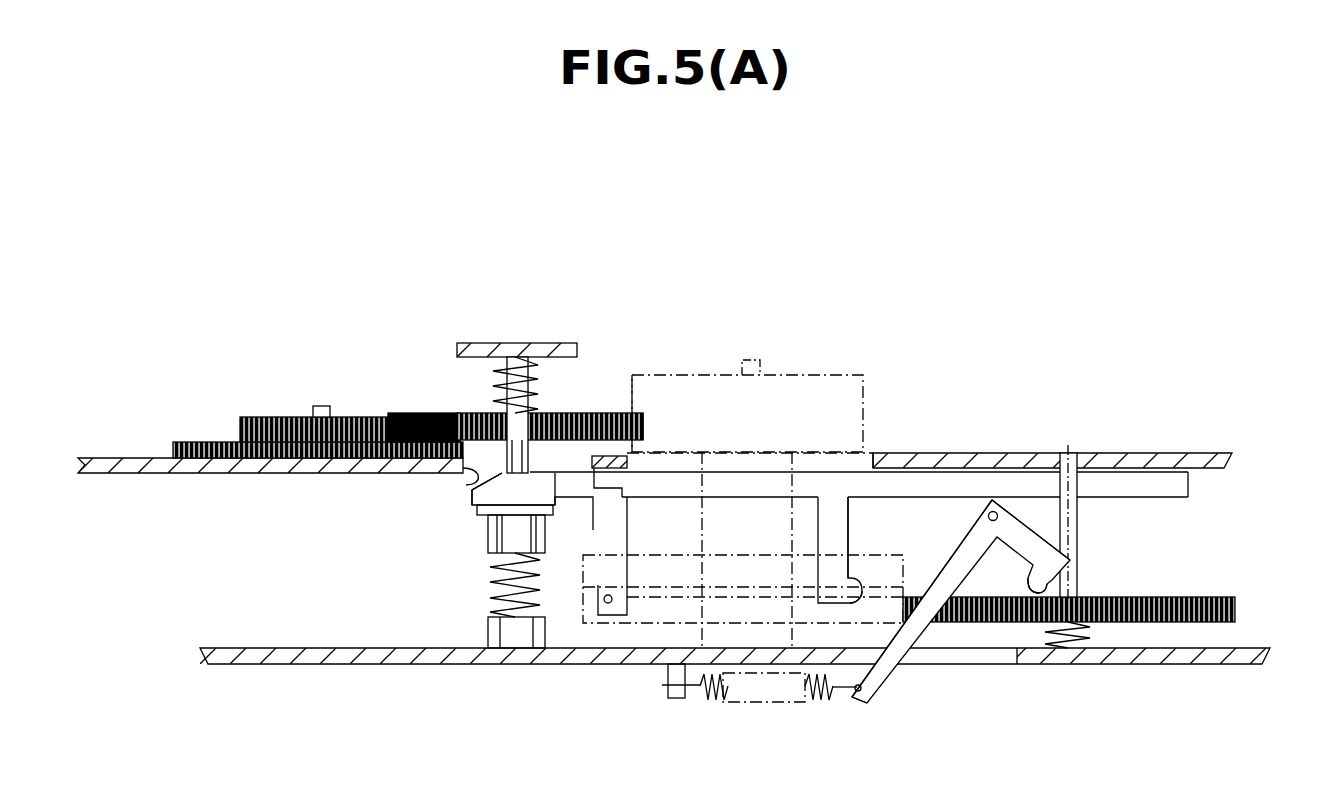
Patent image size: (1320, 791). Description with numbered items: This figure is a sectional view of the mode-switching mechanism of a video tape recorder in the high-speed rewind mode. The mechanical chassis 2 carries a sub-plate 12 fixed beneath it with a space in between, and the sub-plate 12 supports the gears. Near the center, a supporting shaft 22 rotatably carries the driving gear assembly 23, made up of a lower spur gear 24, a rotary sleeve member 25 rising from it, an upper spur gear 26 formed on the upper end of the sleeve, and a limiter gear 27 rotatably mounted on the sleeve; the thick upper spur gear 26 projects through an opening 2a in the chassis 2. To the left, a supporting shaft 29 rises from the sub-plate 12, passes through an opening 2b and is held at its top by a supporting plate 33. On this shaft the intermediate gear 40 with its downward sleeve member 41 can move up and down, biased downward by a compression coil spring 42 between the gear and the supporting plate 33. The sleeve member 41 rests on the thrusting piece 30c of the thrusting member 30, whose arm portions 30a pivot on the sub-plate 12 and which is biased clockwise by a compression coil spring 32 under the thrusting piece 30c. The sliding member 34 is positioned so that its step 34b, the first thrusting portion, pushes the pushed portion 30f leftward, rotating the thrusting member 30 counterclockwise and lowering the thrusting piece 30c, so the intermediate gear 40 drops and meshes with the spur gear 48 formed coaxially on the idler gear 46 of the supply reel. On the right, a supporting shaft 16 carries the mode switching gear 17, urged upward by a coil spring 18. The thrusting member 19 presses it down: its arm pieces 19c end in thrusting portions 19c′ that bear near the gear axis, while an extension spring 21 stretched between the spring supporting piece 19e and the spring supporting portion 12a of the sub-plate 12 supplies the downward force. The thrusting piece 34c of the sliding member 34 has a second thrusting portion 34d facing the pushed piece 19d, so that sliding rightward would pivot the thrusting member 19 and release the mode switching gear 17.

The mechanical chassis 2 is at (1170, 452).
The opening 2a is at (876, 455).
The opening 2b is at (465, 478).
The sub-plate 12 is at (428, 666).
The spring supporting portion 12a is at (676, 698).
The supporting shaft 16 is at (1073, 450).
The mode switching gear 17 is at (1172, 597).
The coil spring 18 is at (1085, 650).
The thrusting member 19 is at (1030, 528).
The arm pieces 19c is at (1040, 540).
The thrusting portion 19c′ is at (1048, 588).
The pushed piece 19d is at (958, 548).
The spring supporting piece 19e is at (872, 698).
The extension spring 21 is at (808, 702).
The supporting shaft 22 is at (748, 362).
The driving gear assembly 23 is at (790, 375).
The lower spur gear 24 is at (617, 625).
The rotary sleeve member 25 is at (702, 513).
The upper spur gear 26 is at (634, 375).
The limiter gear 27 is at (670, 587).
The supporting shaft 29 is at (515, 343).
The thrusting member 30 is at (478, 508).
The arm portions 30a is at (597, 530).
The thrusting piece 30c is at (470, 493).
The pushed portion 30f is at (612, 413).
The compression coil spring 32 is at (497, 583).
The supporting plate 33 is at (550, 343).
The sliding member 34 is at (932, 477).
The step 34b is at (622, 487).
The thrusting piece 34c is at (850, 532).
The second thrusting portion 34d is at (855, 577).
The intermediate gear 40 is at (405, 412).
The sleeve member 41 is at (470, 413).
The compression coil spring 42 is at (505, 387).
The idler gear 46 is at (213, 442).
The spur gear 48 is at (280, 415).